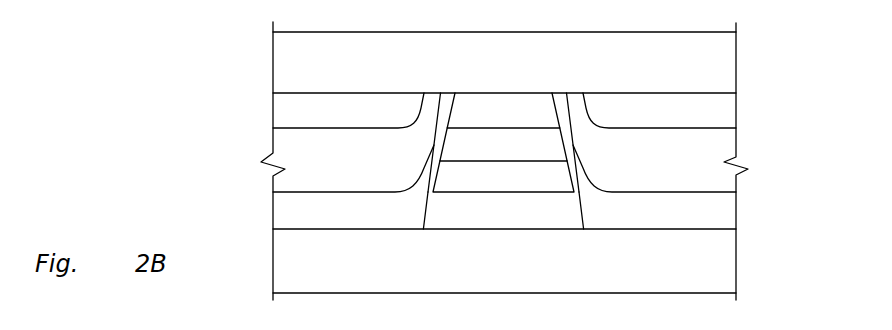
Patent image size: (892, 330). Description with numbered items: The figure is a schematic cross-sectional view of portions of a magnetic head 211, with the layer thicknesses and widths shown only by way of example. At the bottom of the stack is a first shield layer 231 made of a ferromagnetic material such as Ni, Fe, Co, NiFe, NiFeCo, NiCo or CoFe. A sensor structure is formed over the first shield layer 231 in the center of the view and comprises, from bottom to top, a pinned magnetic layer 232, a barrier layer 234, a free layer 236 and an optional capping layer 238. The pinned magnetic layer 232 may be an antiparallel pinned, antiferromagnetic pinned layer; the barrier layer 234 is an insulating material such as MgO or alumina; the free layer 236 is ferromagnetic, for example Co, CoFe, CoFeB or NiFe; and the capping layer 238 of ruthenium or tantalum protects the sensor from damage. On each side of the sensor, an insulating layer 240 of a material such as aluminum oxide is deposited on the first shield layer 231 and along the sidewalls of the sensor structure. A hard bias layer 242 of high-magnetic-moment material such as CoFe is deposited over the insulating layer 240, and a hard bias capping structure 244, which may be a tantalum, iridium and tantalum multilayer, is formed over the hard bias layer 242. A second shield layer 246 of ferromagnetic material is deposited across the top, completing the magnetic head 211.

The magnetic head 211 is at (223, 62).
The first shield layer 231 is at (481, 271).
The pinned magnetic layer 232 is at (482, 222).
The barrier layer 234 is at (482, 189).
The free layer 236 is at (482, 156).
The capping layer 238 is at (482, 122).
The insulating layer 240 is at (322, 222).
The hard bias layer 242 is at (322, 175).
The hard bias capping structure 244 is at (322, 122).
The second shield layer 246 is at (481, 76).